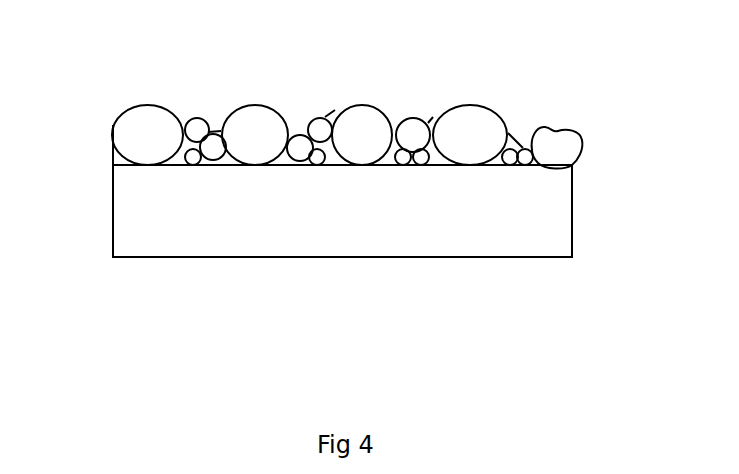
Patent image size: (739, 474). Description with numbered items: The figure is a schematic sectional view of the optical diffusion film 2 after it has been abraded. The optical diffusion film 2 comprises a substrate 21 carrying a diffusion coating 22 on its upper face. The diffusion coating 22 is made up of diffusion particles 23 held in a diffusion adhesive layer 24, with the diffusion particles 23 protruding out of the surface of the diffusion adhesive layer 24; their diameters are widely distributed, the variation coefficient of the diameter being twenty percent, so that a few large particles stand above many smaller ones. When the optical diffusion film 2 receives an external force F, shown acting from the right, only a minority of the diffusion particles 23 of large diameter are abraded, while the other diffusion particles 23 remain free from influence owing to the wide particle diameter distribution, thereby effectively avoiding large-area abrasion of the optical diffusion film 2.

The optical diffusion film 2 is at (365, 202).
The substrate 21 is at (548, 211).
The diffusion coating 22 is at (112, 125).
The diffusion particles 23 is at (562, 143).
The diffusion adhesive layer 24 is at (118, 158).
The external force F is at (578, 119).